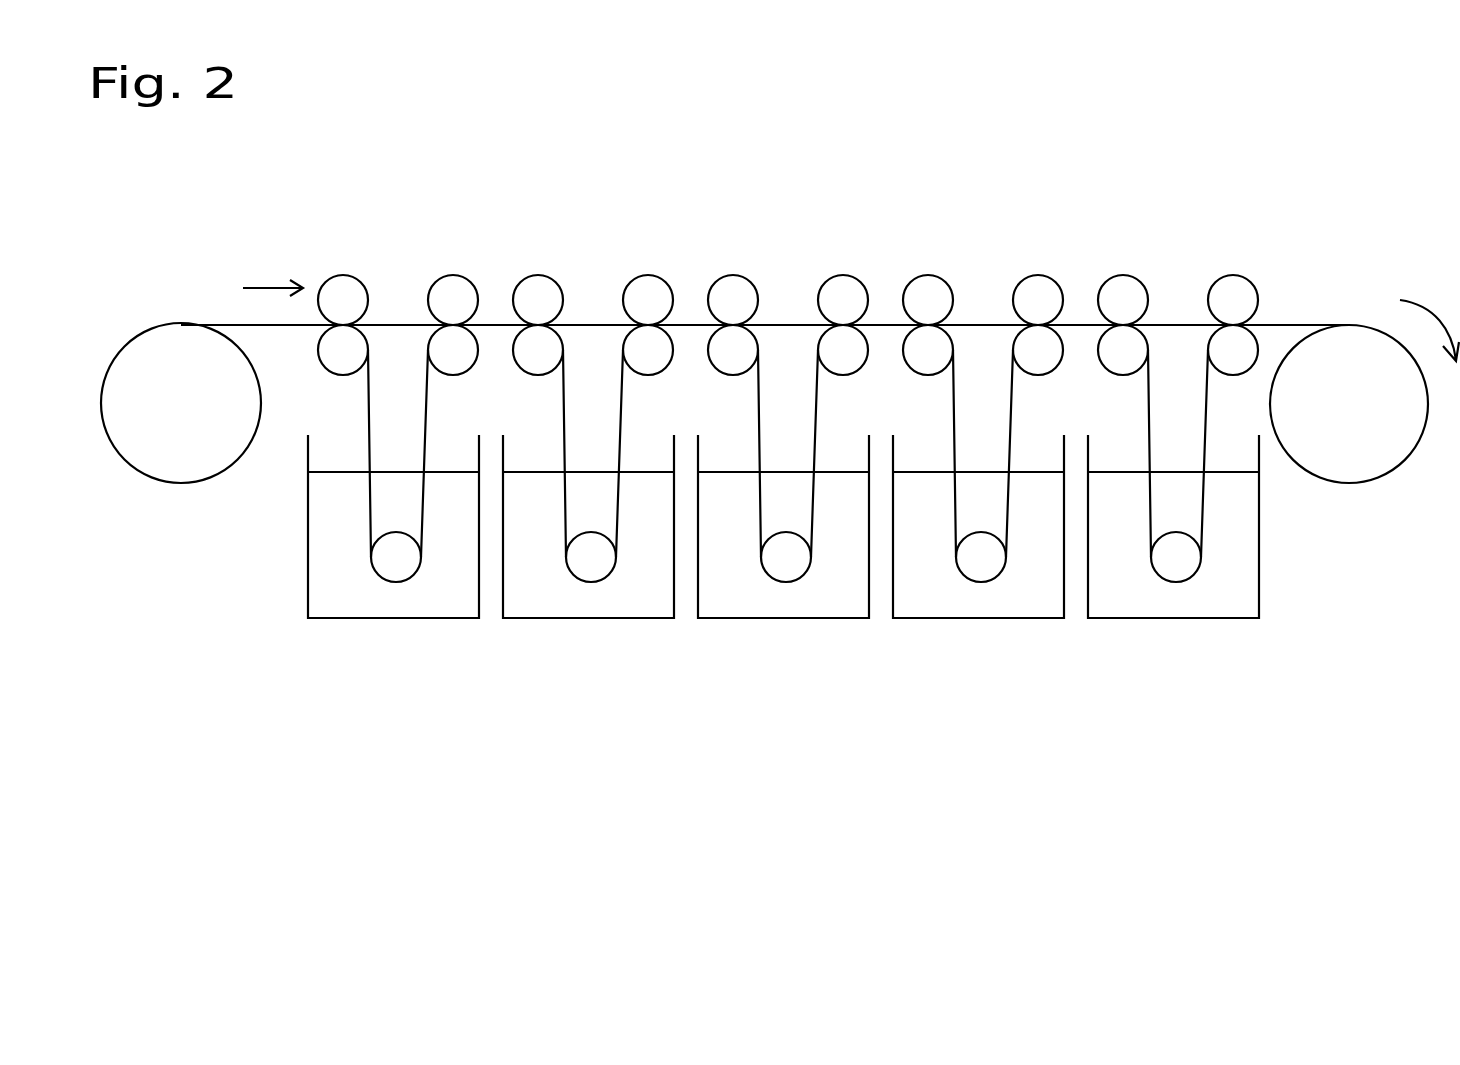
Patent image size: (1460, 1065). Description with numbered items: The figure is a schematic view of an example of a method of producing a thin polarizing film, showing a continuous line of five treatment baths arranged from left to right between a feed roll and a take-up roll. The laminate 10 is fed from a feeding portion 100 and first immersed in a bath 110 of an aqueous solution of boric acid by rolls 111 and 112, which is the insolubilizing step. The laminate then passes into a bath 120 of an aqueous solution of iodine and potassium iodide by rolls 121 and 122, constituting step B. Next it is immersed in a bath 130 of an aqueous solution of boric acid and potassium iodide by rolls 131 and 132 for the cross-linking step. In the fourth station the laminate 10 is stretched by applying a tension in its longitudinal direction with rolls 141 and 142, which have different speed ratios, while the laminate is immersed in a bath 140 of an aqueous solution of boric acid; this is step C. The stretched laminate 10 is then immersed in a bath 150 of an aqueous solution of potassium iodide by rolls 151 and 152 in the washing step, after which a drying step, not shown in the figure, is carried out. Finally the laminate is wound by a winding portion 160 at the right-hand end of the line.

The laminate 10 is at (232, 323).
The feeding portion 100 is at (153, 385).
The bath 110 is at (342, 595).
The roll 111 is at (342, 294).
The roll 112 is at (453, 294).
The bath 120 is at (545, 595).
The roll 121 is at (538, 292).
The roll 122 is at (648, 292).
The bath 130 is at (823, 600).
The roll 131 is at (733, 290).
The roll 132 is at (843, 290).
The bath 140 is at (1018, 600).
The roll 141 is at (928, 290).
The roll 142 is at (1038, 290).
The bath 150 is at (1212, 600).
The roll 151 is at (1120, 292).
The roll 152 is at (1231, 292).
The winding portion 160 is at (1377, 438).